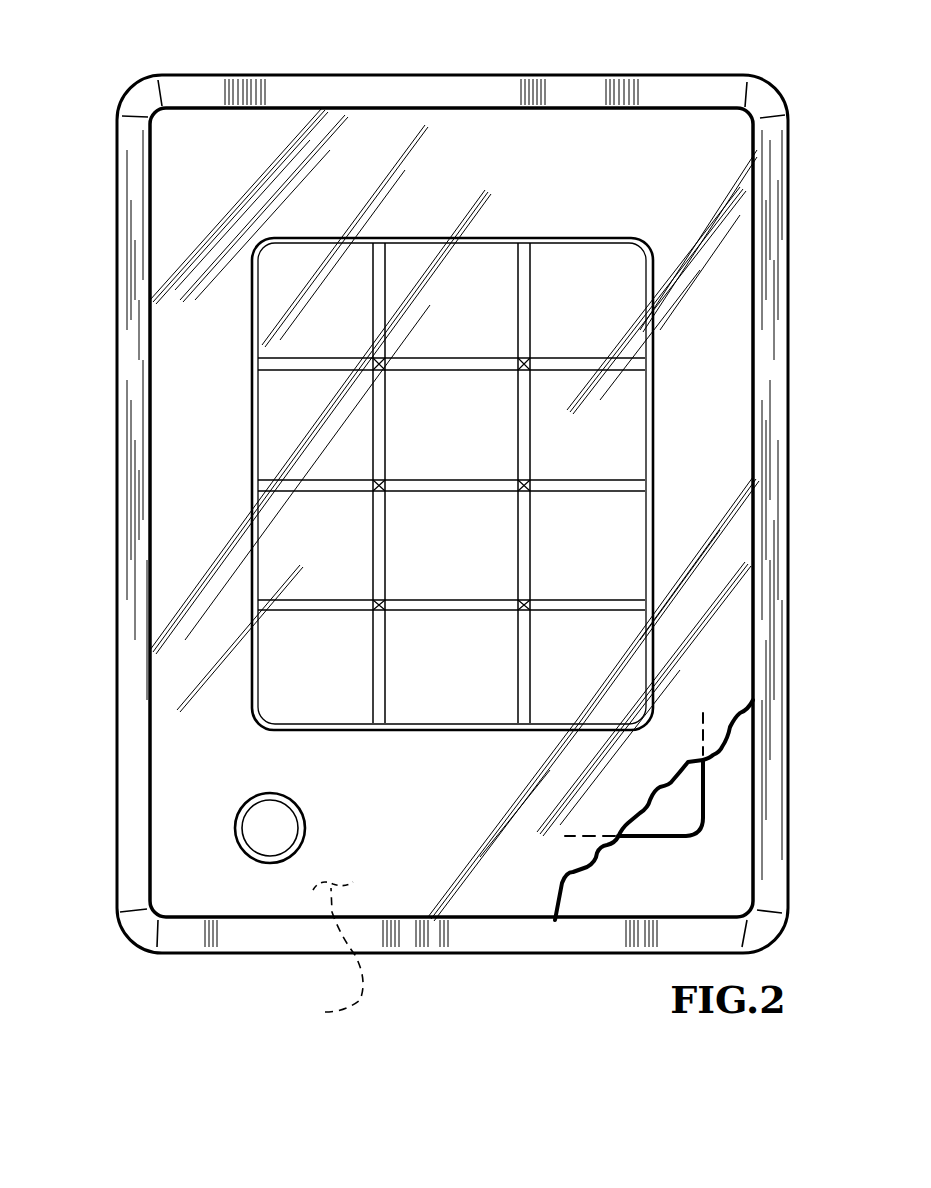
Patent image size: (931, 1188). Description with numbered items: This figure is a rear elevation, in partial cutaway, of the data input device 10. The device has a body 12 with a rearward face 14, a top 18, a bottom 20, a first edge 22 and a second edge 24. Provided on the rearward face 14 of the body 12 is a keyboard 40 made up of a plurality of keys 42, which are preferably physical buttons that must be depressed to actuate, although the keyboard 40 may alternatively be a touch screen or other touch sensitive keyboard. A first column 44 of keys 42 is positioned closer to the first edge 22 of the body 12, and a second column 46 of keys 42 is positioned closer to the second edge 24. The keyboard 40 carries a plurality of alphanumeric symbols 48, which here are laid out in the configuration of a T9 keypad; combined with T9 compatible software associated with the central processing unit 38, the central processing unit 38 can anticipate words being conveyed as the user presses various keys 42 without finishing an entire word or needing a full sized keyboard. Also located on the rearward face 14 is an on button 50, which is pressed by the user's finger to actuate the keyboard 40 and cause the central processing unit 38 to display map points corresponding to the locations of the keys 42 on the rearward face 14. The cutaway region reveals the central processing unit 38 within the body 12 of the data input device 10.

The data input device 10 is at (311, 63).
The body 12 is at (780, 180).
The rearward face 14 is at (322, 961).
The top 18 is at (223, 77).
The bottom 20 is at (257, 953).
The first edge 22 is at (117, 230).
The second edge 24 is at (790, 290).
The central processing unit 38 is at (687, 808).
The keyboard 40 is at (627, 465).
The keys 42 is at (655, 325).
The first column 44 is at (322, 262).
The second column 46 is at (593, 250).
The alphanumeric symbols 48 is at (423, 277).
The on button 50 is at (257, 817).